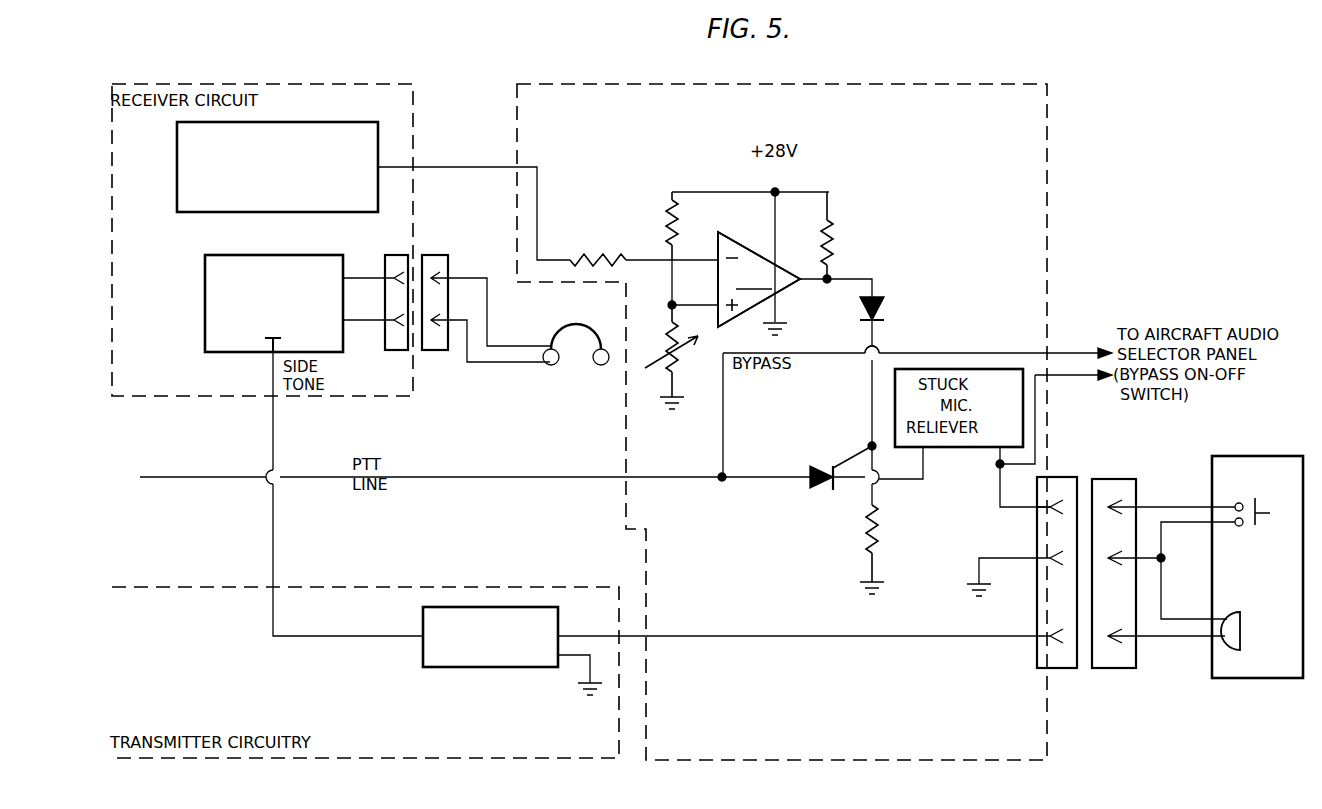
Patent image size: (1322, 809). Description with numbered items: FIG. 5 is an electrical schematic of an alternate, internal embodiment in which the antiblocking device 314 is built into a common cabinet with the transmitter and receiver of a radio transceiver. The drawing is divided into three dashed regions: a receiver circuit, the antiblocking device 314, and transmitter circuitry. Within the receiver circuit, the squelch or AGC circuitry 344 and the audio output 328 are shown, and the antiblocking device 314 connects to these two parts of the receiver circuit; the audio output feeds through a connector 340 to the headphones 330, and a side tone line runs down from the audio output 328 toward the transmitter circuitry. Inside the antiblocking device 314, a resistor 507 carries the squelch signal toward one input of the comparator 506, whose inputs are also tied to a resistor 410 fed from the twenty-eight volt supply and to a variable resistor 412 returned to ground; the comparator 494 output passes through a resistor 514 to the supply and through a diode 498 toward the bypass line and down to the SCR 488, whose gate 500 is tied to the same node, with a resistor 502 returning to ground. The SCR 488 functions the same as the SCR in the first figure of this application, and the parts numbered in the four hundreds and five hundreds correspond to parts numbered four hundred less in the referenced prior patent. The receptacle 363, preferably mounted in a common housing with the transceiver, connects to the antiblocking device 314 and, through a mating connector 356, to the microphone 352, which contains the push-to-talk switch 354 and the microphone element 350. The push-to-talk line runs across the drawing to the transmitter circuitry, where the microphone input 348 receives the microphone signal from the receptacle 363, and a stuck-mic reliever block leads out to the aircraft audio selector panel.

The antiblocking device 314 is at (1047, 192).
The audio output 328 is at (212, 320).
The headphones 330 is at (576, 332).
The connector 340 is at (441, 262).
The squelch or AGC circuitry 344 is at (177, 160).
The microphone input 348 is at (445, 668).
The microphone element 350 is at (1245, 636).
The microphone 352 is at (1246, 456).
The push-to-talk switch 354 is at (1284, 490).
The connector 356 is at (1108, 484).
The receptacle 363 is at (1050, 482).
The resistor 410 is at (666, 208).
The variable resistor 412 is at (684, 372).
The SCR 488 is at (826, 490).
The comparator 494 is at (791, 303).
The diode 498 is at (886, 312).
The SCR gate 500 is at (852, 457).
The resistor 502 is at (882, 530).
The comparator 506 is at (759, 279).
The resistor 507 is at (600, 250).
The resistor 514 is at (836, 240).